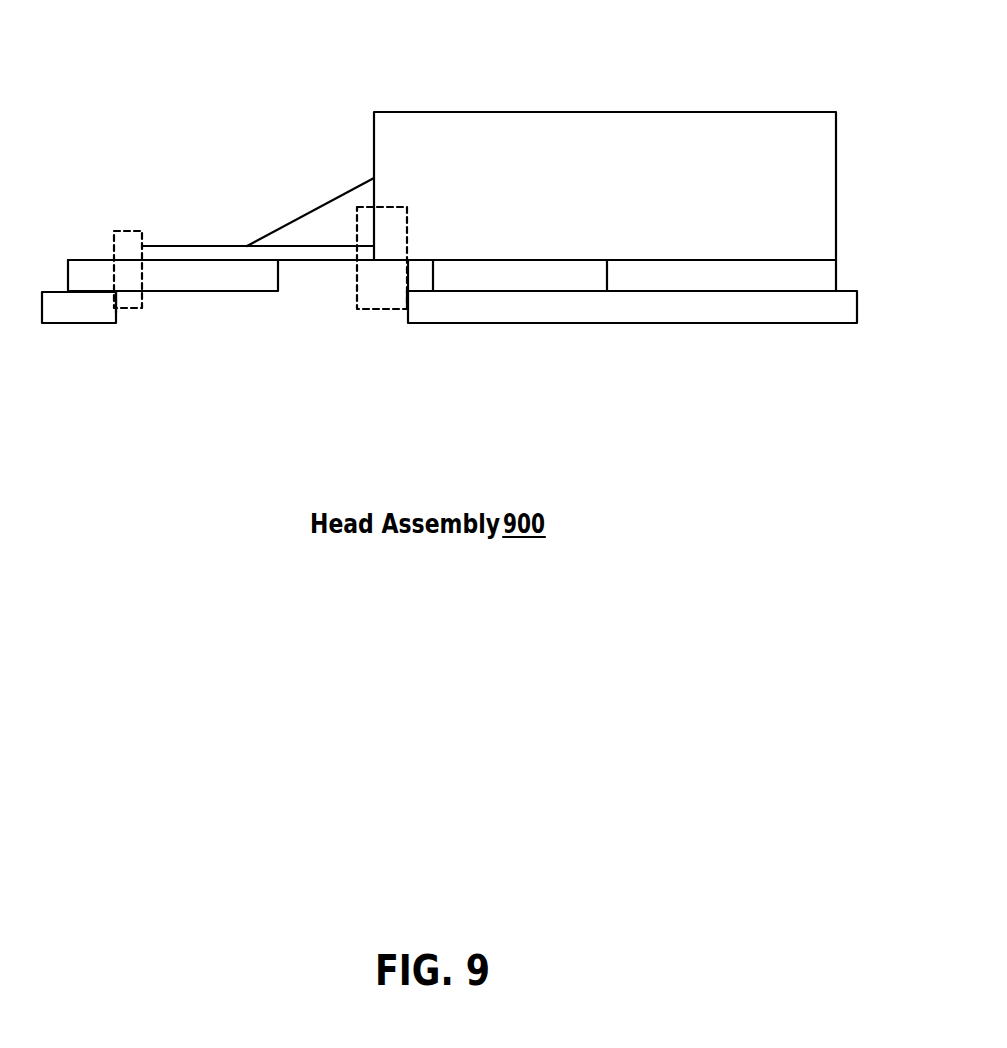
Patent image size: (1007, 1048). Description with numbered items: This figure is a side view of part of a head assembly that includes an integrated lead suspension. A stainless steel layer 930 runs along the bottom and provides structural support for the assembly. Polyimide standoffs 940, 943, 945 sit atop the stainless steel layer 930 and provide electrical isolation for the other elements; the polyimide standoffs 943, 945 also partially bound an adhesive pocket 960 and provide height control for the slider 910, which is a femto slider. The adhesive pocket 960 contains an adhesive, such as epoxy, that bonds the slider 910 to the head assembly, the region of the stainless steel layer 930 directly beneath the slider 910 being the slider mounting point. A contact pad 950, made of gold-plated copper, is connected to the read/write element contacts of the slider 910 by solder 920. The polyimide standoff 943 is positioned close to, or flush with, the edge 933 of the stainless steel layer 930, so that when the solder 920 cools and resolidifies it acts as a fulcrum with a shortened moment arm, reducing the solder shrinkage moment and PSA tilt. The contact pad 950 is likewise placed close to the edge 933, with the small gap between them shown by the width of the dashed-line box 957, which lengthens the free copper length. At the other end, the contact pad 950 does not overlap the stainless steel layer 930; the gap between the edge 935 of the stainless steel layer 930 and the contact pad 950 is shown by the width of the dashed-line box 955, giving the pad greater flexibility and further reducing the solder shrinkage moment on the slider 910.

The slider 910 is at (543, 158).
The solder 920 is at (338, 222).
The stainless steel layer 930 is at (93, 306).
The edge of stainless steel layer 933 is at (402, 314).
The edge of stainless steel layer 935 is at (121, 319).
The polyimide standoff 940 is at (212, 277).
The polyimide standoff 943 is at (423, 272).
The polyimide standoff 945 is at (648, 277).
The contact pad 950 is at (310, 252).
The dashed-line box (gap) 955 is at (130, 243).
The dashed-line box (gap) 957 is at (375, 282).
The adhesive pocket 960 is at (543, 277).